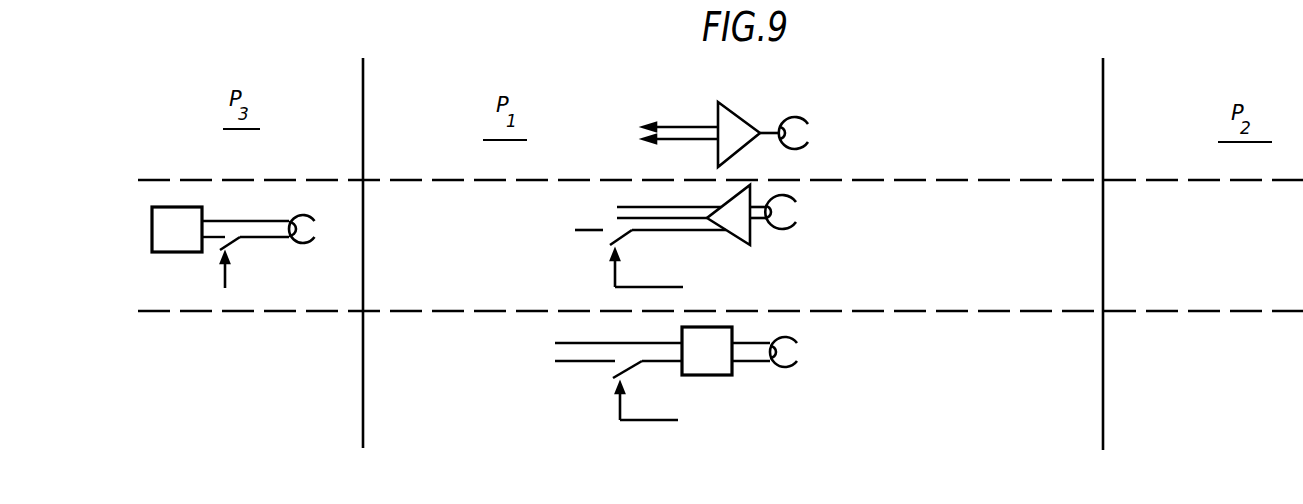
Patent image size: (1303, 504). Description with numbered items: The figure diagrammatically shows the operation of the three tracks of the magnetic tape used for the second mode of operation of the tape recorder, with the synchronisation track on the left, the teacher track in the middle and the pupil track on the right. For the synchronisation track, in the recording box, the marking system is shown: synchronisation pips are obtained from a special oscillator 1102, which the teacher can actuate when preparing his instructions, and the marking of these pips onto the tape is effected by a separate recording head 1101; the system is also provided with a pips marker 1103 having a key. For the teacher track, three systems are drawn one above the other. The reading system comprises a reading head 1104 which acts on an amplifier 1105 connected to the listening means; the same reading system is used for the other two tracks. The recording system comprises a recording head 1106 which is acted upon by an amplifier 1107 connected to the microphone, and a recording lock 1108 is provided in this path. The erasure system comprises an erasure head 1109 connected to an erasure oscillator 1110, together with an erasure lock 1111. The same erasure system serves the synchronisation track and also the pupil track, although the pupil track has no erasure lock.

The recording head 1101 is at (320, 216).
The oscillator 1102 is at (220, 229).
The pips marker 1103 is at (234, 243).
The reading head 1104 is at (800, 117).
The amplifier 1105 is at (752, 109).
The recording head 1106 is at (779, 228).
The amplifier 1107 is at (745, 244).
The recording lock 1108 is at (622, 246).
The erasure head 1109 is at (777, 340).
The erasure oscillator 1110 is at (662, 351).
The erasure lock 1111 is at (630, 372).